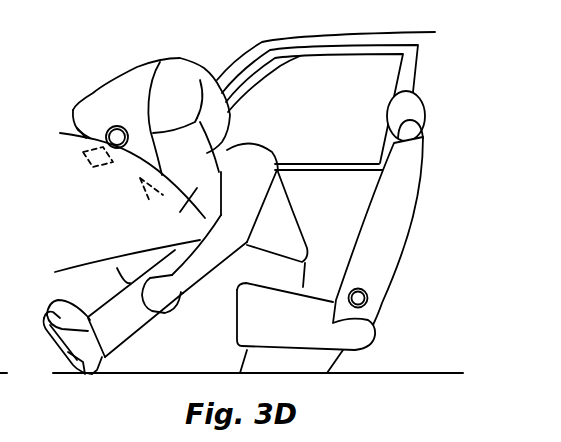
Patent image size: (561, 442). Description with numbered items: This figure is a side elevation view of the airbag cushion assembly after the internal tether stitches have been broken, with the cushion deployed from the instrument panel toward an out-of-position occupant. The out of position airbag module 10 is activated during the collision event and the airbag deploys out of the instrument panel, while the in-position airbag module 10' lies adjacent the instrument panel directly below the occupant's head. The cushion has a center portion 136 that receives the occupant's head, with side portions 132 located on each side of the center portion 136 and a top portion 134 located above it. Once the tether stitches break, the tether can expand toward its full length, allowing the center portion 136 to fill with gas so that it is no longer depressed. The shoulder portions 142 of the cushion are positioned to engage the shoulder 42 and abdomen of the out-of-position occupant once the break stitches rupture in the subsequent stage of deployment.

The top portion 134 is at (182, 74).
The center portion 136 is at (198, 117).
The side portions 132 is at (197, 128).
The shoulder portions 142 is at (180, 212).
The shoulder 42 is at (253, 175).
The out of position airbag module 10 is at (92, 162).
The in-position airbag module 10' is at (138, 200).